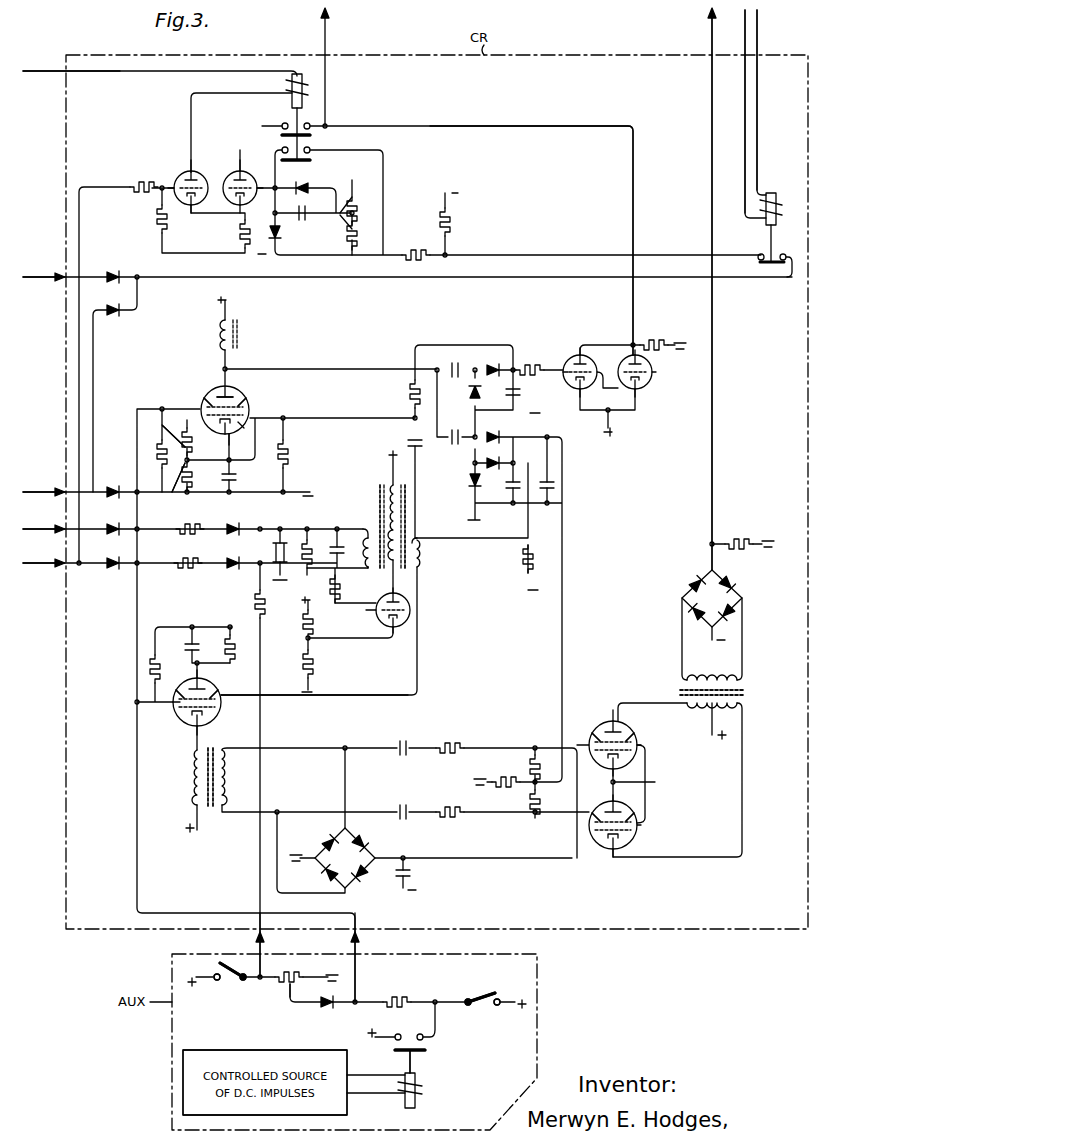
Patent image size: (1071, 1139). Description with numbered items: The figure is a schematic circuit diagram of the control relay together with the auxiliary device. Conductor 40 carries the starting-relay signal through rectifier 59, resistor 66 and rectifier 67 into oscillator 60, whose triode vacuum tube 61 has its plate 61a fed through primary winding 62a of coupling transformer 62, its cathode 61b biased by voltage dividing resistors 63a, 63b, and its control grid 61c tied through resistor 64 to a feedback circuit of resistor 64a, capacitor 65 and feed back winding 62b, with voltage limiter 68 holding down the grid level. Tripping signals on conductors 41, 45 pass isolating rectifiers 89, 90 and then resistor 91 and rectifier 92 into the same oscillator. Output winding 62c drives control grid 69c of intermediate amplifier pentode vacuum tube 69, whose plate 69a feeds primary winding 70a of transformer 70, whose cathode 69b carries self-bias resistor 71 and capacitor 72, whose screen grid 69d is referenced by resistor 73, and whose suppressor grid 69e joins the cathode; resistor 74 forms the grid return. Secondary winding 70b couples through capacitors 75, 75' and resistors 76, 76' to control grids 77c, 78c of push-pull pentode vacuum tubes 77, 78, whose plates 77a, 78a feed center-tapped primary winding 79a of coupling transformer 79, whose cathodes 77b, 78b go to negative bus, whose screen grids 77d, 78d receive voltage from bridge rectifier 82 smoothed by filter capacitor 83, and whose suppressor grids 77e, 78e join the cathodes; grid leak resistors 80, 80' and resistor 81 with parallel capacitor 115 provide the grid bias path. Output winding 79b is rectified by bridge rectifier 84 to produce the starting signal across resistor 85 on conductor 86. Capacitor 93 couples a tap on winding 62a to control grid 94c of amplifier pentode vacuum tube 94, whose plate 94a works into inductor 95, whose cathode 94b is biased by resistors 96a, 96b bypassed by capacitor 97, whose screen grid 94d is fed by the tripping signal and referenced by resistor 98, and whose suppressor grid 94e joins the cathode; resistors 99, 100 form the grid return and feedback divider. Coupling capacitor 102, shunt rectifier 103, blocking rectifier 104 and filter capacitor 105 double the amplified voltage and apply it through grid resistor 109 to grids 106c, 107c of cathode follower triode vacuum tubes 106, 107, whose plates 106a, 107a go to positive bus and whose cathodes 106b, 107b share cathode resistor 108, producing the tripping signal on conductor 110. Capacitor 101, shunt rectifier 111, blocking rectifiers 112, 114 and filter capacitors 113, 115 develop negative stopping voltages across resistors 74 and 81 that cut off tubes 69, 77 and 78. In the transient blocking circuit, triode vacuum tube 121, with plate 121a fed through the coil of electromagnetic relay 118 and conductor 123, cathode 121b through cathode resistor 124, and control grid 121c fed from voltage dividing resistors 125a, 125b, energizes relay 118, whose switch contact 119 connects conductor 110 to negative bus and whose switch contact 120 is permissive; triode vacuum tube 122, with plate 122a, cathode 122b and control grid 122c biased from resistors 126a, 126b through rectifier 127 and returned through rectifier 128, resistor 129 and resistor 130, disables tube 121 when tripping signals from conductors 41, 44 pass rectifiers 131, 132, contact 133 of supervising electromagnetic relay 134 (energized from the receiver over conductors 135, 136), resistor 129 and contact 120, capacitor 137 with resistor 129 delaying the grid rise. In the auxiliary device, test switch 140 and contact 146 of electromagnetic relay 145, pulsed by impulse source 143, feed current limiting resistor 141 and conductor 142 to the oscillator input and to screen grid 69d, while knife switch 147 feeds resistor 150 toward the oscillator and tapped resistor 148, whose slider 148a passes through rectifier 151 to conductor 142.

The conductor 40 is at (42, 560).
The conductor 41 is at (42, 489).
The conductor 44 is at (42, 274).
The conductor 45 is at (42, 527).
The rectifier 59 is at (111, 567).
The oscillator 60 is at (311, 579).
The triode vacuum tube 61 is at (409, 621).
The plate 61a is at (403, 600).
The cathode 61b is at (385, 630).
The control grid 61c is at (376, 608).
The coupling transformer 62 is at (381, 526).
The primary winding 62a is at (401, 502).
The feed back winding 62b is at (362, 575).
The output winding 62c is at (423, 552).
The voltage dividing resistor 63a is at (302, 623).
The voltage dividing resistor 63b is at (302, 657).
The resistor 64 is at (330, 594).
The resistor 64a is at (312, 535).
The capacitor 65 is at (343, 550).
The resistor 66 is at (182, 570).
The rectifier 67 is at (232, 570).
The voltage limiter 68 is at (278, 537).
The pentode vacuum tube 69 is at (220, 687).
The plate 69a is at (180, 734).
The cathode 69b is at (214, 668).
The control grid 69c is at (171, 681).
The screen grid 69d is at (163, 712).
The suppressor grid 69e is at (228, 708).
The transformer 70 is at (211, 787).
The primary winding 70a is at (192, 779).
The secondary winding 70b is at (224, 779).
The resistor 71 is at (237, 643).
The capacitor 72 is at (184, 646).
The resistor 73 is at (150, 657).
The resistor 74 is at (522, 555).
The capacitor 75 is at (405, 734).
The capacitor 75' is at (407, 798).
The resistor 76 is at (450, 733).
The resistor 76' is at (450, 797).
The pentode vacuum tube 77 is at (645, 745).
The plate 77a is at (611, 718).
The cathode 77b is at (598, 772).
The control grid 77c is at (647, 753).
The screen grid 77d is at (590, 732).
The suppressor grid 77e is at (630, 732).
The pentode vacuum tube 78 is at (589, 834).
The plate 78a is at (598, 859).
The cathode 78b is at (609, 802).
The control grid 78c is at (620, 804).
The screen grid 78d is at (644, 820).
The suppressor grid 78e is at (630, 837).
The coupling transformer 79 is at (724, 690).
The primary winding 79a is at (742, 708).
The output winding 79b is at (709, 678).
The grid leak resistor 80 is at (522, 767).
The grid leak resistor 80' is at (552, 803).
The resistor 81 is at (504, 786).
The full wave bridge type rectifier 82 is at (332, 858).
The filter capacitor 83 is at (412, 876).
The full wave bridge type rectifier 84 is at (712, 598).
The resistor 85 is at (738, 534).
The conductor 86 is at (710, 33).
The rectifier 89 is at (112, 486).
The rectifier 90 is at (112, 524).
The resistor 91 is at (192, 525).
The rectifier 92 is at (232, 525).
The capacitor 93 is at (410, 442).
The pentode vacuum tube 94 is at (220, 389).
The plate 94a is at (232, 394).
The cathode 94b is at (215, 443).
The control grid 94c is at (244, 437).
The screen grid 94d is at (202, 398).
The suppressor grid 94e is at (249, 395).
The inductor 95 is at (220, 334).
The voltage dividing resistor 96a is at (164, 428).
The voltage dividing resistor 96b is at (172, 486).
The capacitor 97 is at (237, 477).
The resistor 98 is at (155, 448).
The resistor 99 is at (289, 456).
The resistor 100 is at (408, 392).
The capacitor 101 is at (455, 444).
The coupling capacitor 102 is at (454, 363).
The shunt rectifier 103 is at (470, 391).
The blocking rectifier 104 is at (493, 363).
The filter capacitor 105 is at (520, 394).
The triode vacuum tube 106 is at (593, 355).
The plate 106a is at (575, 401).
The cathode 106b is at (598, 346).
The grid 106c is at (566, 365).
The triode vacuum tube 107 is at (626, 384).
The plate 107a is at (644, 388).
The cathode 107b is at (649, 358).
The grid 107c is at (653, 373).
The cathode resistor 108 is at (652, 335).
The grid resistor 109 is at (530, 360).
The conductor 110 is at (325, 33).
The shunt rectifier 111 is at (470, 477).
The blocking rectifier 112 is at (496, 462).
The filter capacitor 113 is at (508, 484).
The blocking rectifier 114 is at (495, 434).
The capacitor 115 is at (557, 483).
The electromagnetic relay 118 is at (286, 83).
The switch contact 119 is at (311, 135).
The switch contact 120 is at (311, 158).
The triode vacuum tube 121 is at (185, 170).
The plate 121a is at (211, 161).
The cathode 121b is at (186, 215).
The control grid 121c is at (166, 174).
The triode vacuum tube 122 is at (232, 170).
The plate 122a is at (260, 161).
The cathode 122b is at (224, 217).
The control grid 122c is at (265, 201).
The conductor 123 is at (47, 68).
The cathode resistor 124 is at (238, 240).
The voltage dividing resistor 125a is at (134, 180).
The voltage dividing resistor 125b is at (158, 212).
The resistor 126a is at (365, 198).
The resistor 126b is at (367, 223).
The rectifier 127 is at (306, 186).
The rectifier 128 is at (281, 235).
The resistor 129 is at (416, 262).
The resistor 130 is at (450, 222).
The rectifier 131 is at (113, 315).
The rectifier 132 is at (112, 273).
The contact 133 is at (771, 266).
The supervising electromagnetic relay 134 is at (781, 205).
The conductor 135 is at (744, 33).
The conductor 136 is at (758, 33).
The capacitor 137 is at (303, 220).
The single pole knife switch 140 is at (476, 997).
The current limiting resistor 141 is at (397, 1001).
The conductor 142 is at (358, 945).
The controlled source of direct current unidirectional impulses 143 is at (252, 945).
The electromagnetic relay 145 is at (425, 1088).
The contact 146 is at (425, 1053).
The single pole knife switch 147 is at (232, 977).
The adjustably tapped resistor 148 is at (290, 974).
The slider 148a is at (286, 992).
The resistor 150 is at (255, 593).
The rectifier 151 is at (326, 1006).